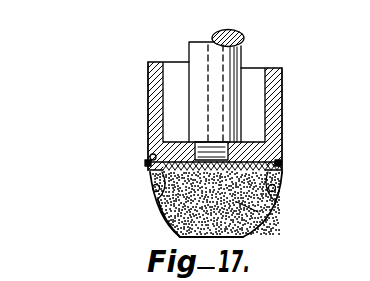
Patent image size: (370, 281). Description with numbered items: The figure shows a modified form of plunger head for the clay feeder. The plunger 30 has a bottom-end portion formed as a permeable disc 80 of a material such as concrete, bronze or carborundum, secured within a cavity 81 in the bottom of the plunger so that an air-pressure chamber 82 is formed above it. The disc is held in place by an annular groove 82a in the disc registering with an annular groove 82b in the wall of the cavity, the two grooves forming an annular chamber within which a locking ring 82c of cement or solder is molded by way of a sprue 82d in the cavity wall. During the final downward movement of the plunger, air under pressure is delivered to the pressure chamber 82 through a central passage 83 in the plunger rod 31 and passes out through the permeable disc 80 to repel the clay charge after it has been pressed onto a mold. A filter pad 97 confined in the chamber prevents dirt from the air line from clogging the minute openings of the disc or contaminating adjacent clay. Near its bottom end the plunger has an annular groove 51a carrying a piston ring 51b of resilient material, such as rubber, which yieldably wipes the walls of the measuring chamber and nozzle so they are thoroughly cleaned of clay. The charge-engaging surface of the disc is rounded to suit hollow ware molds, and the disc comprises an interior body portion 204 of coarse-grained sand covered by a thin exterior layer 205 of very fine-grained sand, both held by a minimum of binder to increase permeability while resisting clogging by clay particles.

The plunger 30 is at (283, 82).
The core member 31 is at (238, 60).
The central passage 83 is at (242, 33).
The filter pad 97 is at (258, 158).
The air-pressure chamber 82 is at (151, 163).
The annular groove 82a is at (141, 219).
The annular groove 82b is at (150, 180).
The locking ring 82c is at (275, 198).
The sprue 82d is at (282, 178).
The cavity 81 is at (156, 193).
The annular groove 51a is at (152, 155).
The piston ring 51b is at (145, 163).
The interior body portion 204 is at (258, 212).
The exterior layer 205 is at (254, 226).
The permeable disc 80 is at (170, 229).